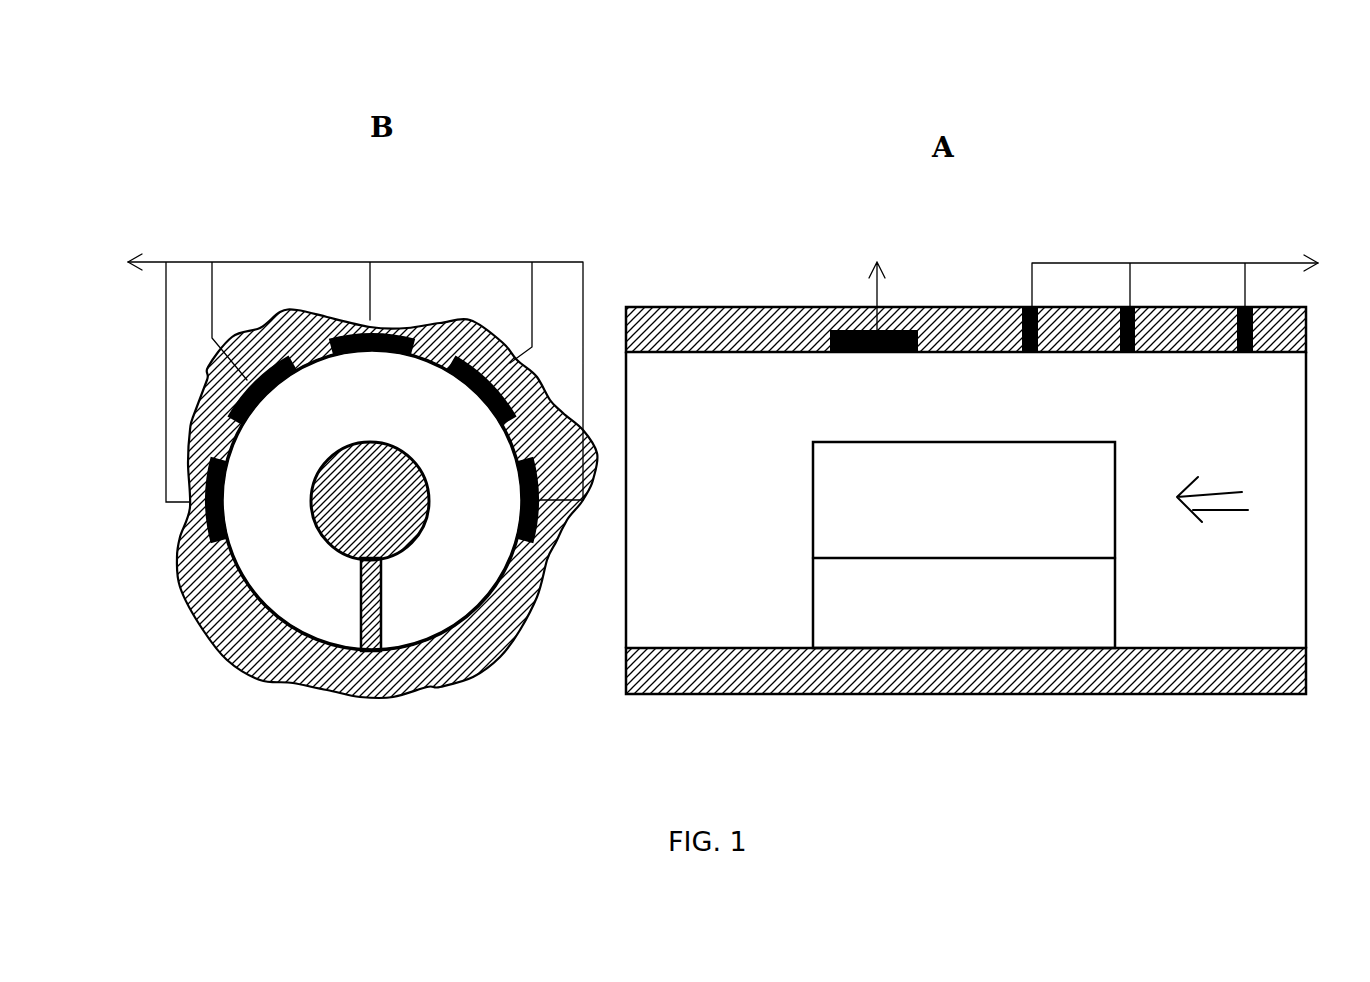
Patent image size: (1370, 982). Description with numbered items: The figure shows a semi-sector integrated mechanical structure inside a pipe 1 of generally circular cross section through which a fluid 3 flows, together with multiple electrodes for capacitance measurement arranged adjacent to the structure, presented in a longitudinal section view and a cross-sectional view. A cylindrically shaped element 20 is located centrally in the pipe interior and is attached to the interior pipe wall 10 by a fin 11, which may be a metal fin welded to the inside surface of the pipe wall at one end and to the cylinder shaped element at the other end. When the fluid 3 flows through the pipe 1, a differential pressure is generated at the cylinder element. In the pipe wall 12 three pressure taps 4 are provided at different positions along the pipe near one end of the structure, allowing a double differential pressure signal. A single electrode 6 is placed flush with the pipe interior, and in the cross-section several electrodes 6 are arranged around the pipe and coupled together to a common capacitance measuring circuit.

The pipe 1 is at (696, 306).
The fluid 3 is at (1212, 490).
The pressure taps 4 is at (1030, 352).
The electrode 6 is at (237, 413).
The interior pipe wall 10 is at (270, 618).
The fin 11 is at (383, 603).
The pipe wall 12 is at (413, 462).
The device 20 is at (934, 417).